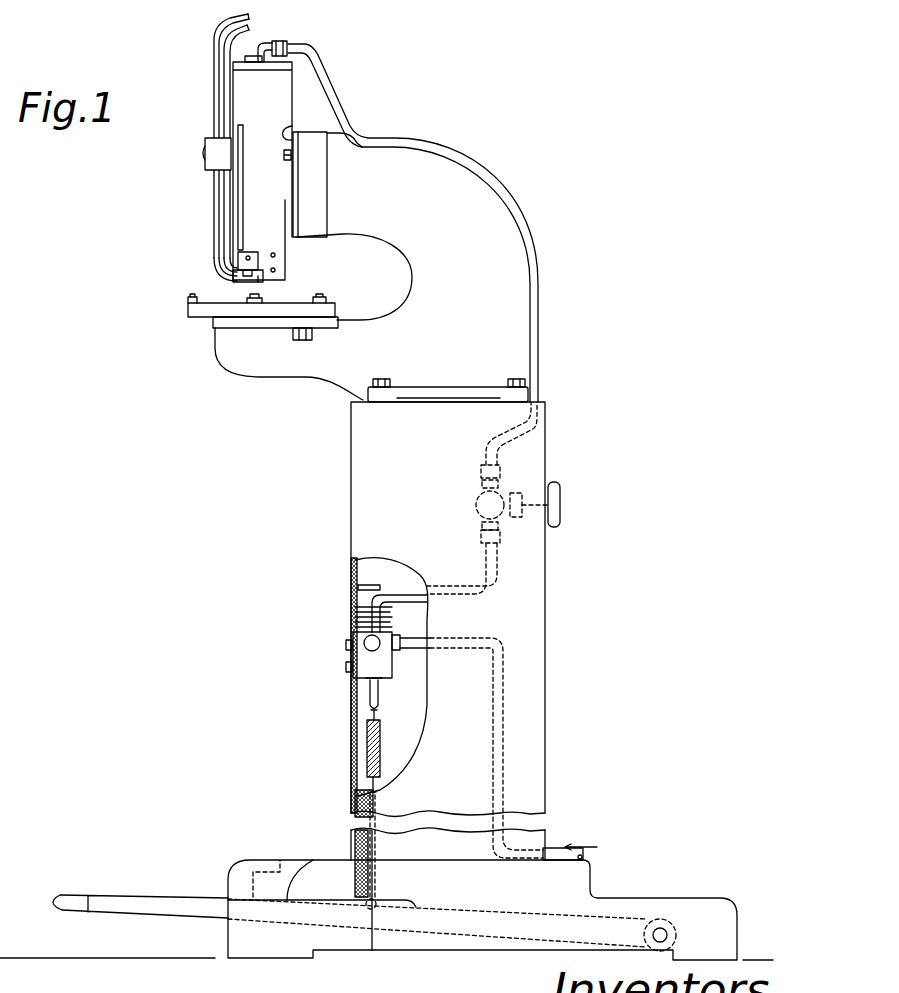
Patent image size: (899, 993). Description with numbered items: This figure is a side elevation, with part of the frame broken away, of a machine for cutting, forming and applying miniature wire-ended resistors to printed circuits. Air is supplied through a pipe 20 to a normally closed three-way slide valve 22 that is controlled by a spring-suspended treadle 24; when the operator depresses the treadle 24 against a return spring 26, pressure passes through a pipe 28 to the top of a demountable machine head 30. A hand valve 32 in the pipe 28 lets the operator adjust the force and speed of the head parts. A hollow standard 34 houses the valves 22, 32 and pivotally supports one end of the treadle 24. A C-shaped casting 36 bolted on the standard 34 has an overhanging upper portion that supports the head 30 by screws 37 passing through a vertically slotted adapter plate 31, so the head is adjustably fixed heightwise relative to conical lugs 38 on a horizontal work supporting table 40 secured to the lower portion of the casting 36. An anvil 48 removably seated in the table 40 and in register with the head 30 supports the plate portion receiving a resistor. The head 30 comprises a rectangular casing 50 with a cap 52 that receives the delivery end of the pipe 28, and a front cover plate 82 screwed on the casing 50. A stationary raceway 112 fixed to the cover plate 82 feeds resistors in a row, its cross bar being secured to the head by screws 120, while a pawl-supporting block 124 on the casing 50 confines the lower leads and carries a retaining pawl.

The pipe 20 is at (595, 858).
The three-way slide valve 22 is at (392, 665).
The treadle 24 is at (140, 894).
The return spring 26 is at (380, 745).
The pipe 28 is at (540, 312).
The machine head 30 is at (199, 191).
The adapter plate 31 is at (286, 136).
The hand valve 32 is at (562, 498).
The hollow standard 34 is at (547, 618).
The C-shaped casting 36 is at (226, 360).
The screws 37 is at (285, 156).
The conical lugs 38 is at (190, 296).
The work supporting table 40 is at (188, 310).
The anvil 48 is at (268, 297).
The casing 50 is at (293, 96).
The cap 52 is at (245, 57).
The front cover plate 82 is at (228, 222).
The raceway 112 is at (212, 111).
The screws 120 is at (236, 278).
The pawl-supporting block 124 is at (253, 252).